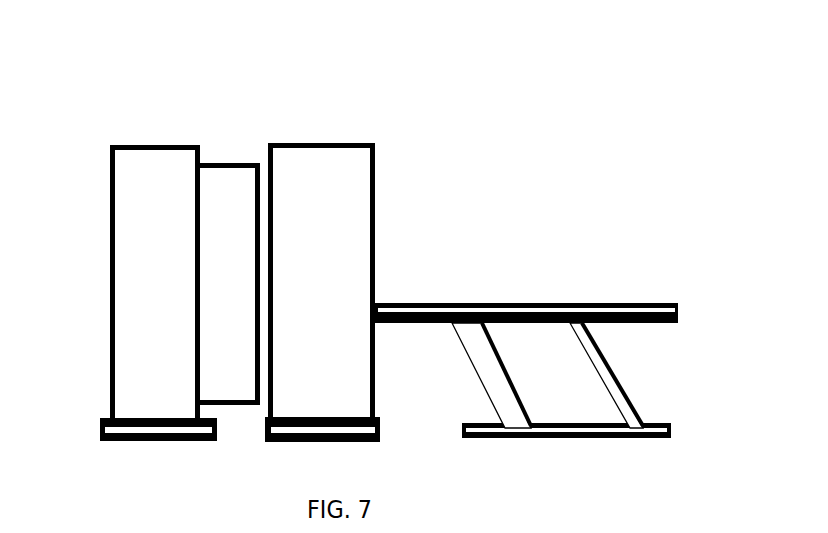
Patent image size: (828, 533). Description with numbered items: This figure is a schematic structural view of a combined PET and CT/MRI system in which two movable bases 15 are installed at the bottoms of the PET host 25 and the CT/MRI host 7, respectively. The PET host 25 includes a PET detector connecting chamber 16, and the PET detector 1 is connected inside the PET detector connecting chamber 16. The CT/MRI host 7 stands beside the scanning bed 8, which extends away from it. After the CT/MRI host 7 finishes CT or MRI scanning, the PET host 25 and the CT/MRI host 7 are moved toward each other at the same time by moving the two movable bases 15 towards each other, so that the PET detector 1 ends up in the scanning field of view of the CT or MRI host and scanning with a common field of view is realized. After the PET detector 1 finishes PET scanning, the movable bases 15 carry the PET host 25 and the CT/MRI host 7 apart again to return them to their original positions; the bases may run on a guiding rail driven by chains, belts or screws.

The PET host 25 is at (137, 116).
The PET detector connecting chamber 16 is at (148, 178).
The PET detector 1 is at (240, 187).
The CT/MRI host 7 is at (335, 170).
The scanning bed 8 is at (618, 302).
The movable base 15 is at (290, 428).